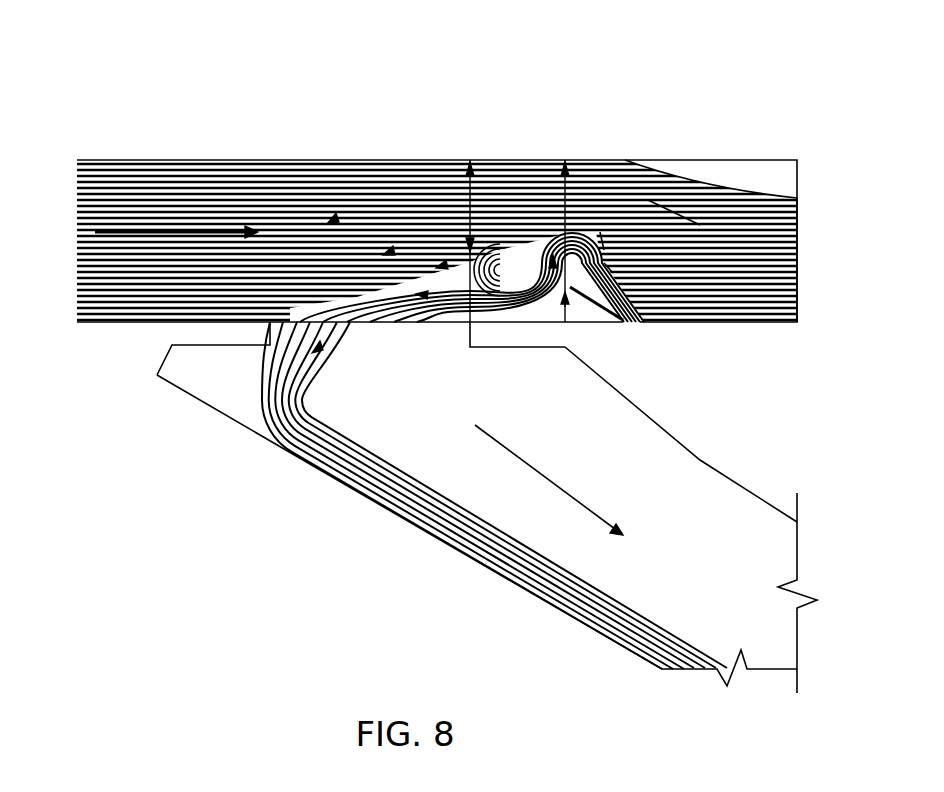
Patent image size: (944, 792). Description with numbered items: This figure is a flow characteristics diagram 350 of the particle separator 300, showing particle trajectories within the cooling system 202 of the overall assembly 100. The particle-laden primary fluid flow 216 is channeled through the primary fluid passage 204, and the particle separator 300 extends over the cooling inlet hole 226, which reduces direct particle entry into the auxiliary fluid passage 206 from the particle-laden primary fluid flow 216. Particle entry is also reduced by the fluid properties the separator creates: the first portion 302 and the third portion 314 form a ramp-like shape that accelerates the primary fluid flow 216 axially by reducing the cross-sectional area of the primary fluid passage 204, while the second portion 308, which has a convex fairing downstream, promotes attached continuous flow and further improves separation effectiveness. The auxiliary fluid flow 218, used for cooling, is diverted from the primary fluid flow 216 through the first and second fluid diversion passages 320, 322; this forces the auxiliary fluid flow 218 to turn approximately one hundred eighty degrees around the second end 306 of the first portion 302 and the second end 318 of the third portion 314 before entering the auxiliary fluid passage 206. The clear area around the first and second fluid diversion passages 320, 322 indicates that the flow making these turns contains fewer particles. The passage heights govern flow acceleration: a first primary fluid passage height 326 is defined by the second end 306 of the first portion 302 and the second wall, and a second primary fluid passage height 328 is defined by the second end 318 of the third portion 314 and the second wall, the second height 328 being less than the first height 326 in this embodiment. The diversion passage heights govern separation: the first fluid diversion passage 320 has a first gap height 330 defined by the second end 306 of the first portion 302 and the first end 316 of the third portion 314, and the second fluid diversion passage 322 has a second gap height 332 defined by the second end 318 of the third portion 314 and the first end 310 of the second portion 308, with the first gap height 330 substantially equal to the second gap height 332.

The extrusion system 100 is at (712, 67).
The flow characteristics diagram 350 is at (121, 145).
The particle-laden primary fluid flow 216 is at (210, 160).
The particle separator 300 is at (306, 160).
The first portion 302 is at (352, 160).
The second end of first portion 306 is at (392, 160).
The first primary fluid passage height 326 is at (450, 160).
The third portion 314 is at (537, 160).
The second primary fluid passage height 328 is at (580, 160).
The second end of third portion 318 is at (607, 160).
The second gap height 332 is at (643, 166).
The first end of second portion 310 is at (797, 226).
The second portion 308 is at (797, 294).
The primary fluid passage 204 is at (121, 292).
The cooling inlet hole 226 is at (278, 399).
The cooling system 202 is at (206, 450).
The first fluid diversion passage 320 is at (413, 318).
The first gap height 330 is at (452, 314).
The first end of third portion 316 is at (485, 307).
The second fluid diversion passage 322 is at (552, 291).
The auxiliary fluid flow 218 is at (560, 458).
The auxiliary fluid passage 206 is at (693, 453).